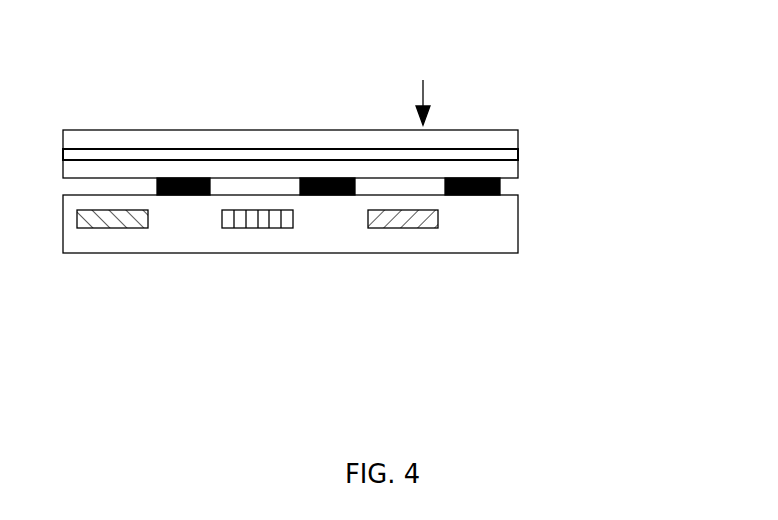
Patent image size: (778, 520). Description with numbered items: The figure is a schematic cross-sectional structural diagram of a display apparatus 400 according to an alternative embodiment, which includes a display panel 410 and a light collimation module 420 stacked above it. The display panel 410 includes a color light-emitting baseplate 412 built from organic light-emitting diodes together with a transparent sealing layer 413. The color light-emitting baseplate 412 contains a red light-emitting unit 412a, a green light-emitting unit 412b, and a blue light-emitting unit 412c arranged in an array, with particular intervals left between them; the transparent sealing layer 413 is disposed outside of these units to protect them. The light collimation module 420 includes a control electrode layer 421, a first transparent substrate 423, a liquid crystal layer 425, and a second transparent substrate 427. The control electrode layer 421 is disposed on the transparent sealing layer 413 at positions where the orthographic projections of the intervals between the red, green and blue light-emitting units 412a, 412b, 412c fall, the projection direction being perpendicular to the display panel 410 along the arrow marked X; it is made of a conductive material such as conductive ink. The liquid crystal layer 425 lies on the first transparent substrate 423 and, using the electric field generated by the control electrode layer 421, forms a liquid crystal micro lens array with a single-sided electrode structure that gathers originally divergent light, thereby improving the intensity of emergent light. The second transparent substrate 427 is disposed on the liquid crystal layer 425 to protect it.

The display apparatus 400 is at (322, 37).
The display panel 410 is at (338, 363).
The color light-emitting baseplate 412 is at (490, 310).
The red light-emitting unit 412a is at (122, 228).
The green light-emitting unit 412b is at (268, 228).
The blue light-emitting unit 412c is at (405, 228).
The transparent sealing layer 413 is at (72, 255).
The light collimation module 420 is at (639, 110).
The control electrode layer 421 is at (500, 190).
The first transparent substrate 423 is at (518, 172).
The liquid crystal layer 425 is at (518, 152).
The second transparent substrate 427 is at (518, 133).